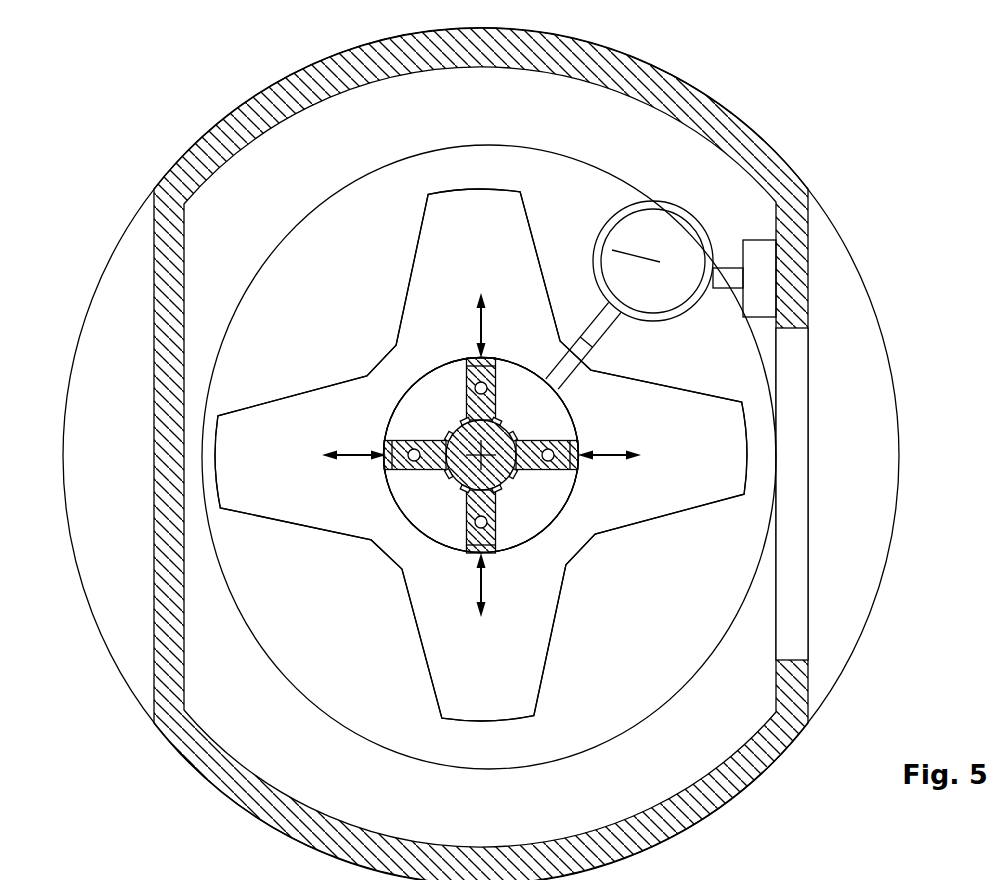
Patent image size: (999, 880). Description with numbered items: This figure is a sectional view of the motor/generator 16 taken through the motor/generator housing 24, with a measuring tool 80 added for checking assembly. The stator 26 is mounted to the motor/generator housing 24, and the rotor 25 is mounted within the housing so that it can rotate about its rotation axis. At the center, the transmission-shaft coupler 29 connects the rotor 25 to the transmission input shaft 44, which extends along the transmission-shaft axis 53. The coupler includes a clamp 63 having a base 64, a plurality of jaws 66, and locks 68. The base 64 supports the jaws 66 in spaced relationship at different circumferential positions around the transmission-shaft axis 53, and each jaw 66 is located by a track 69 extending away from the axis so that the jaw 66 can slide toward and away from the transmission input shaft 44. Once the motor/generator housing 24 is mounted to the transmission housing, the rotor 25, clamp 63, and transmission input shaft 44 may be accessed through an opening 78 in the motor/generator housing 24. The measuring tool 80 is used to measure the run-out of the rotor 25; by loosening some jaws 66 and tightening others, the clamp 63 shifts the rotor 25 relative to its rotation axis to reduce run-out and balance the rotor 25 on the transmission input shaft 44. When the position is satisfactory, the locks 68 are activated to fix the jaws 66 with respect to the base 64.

The motor/generator 16 is at (745, 73).
The motor/generator housing 24 is at (498, 454).
The rotor 25 is at (481, 455).
The stator 26 is at (235, 210).
The transmission-shaft coupler 29 is at (413, 497).
The transmission input shaft 44 is at (443, 432).
The transmission-shaft axis 53 is at (505, 471).
The clamp 63 is at (481, 455).
The base 64 is at (403, 482).
The jaws 66 is at (466, 393).
The locks 68 is at (473, 403).
The track 69 is at (466, 527).
The opening 78 is at (855, 468).
The measuring tool 80 is at (743, 235).